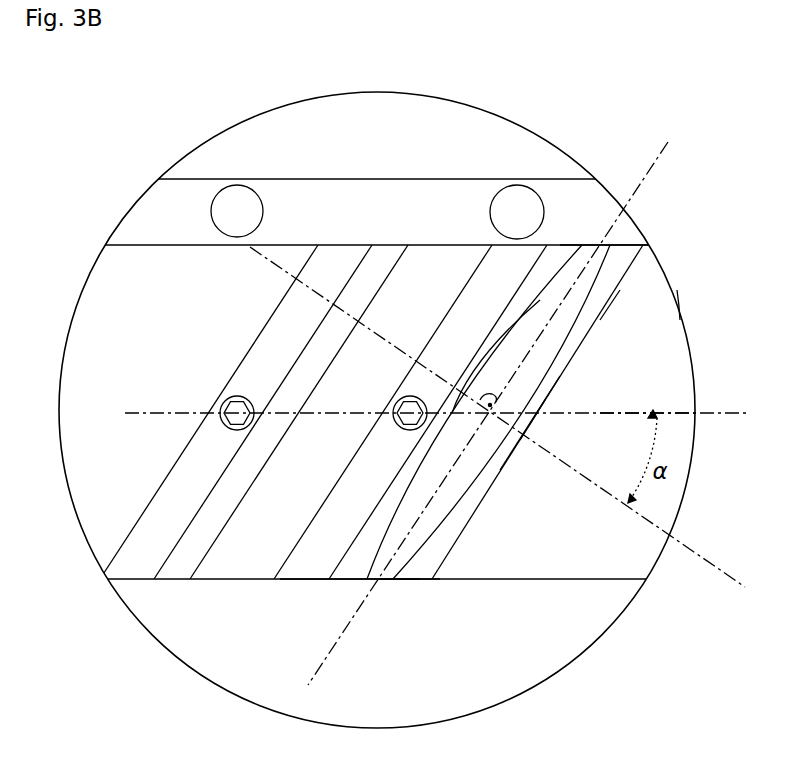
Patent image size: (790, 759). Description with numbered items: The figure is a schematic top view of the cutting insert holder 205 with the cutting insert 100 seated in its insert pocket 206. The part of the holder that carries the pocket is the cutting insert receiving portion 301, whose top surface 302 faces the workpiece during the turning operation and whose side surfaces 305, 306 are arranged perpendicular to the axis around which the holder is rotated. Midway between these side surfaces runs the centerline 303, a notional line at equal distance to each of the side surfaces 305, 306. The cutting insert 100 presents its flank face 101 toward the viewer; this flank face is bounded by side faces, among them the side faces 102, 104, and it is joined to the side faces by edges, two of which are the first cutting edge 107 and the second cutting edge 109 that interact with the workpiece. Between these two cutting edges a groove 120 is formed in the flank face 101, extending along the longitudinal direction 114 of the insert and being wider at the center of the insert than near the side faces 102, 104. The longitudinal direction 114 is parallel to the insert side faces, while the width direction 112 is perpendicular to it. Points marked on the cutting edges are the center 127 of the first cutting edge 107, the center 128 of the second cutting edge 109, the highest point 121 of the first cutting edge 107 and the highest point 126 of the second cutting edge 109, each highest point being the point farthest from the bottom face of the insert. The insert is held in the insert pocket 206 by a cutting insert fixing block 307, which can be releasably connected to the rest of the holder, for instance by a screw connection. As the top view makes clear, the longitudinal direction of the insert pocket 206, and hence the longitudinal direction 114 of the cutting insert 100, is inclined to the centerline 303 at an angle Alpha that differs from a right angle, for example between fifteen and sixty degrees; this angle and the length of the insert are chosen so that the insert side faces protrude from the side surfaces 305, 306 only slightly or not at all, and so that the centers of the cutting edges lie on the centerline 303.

The cutting insert 100 is at (600, 348).
The flank face 101 is at (463, 530).
The side face 102 is at (412, 597).
The side face 104 is at (623, 236).
The first cutting edge 107 is at (500, 470).
The second cutting edge 109 is at (376, 503).
The width direction 112 is at (696, 553).
The longitudinal direction 114 is at (659, 159).
The groove 120 is at (562, 278).
The highest point of the first cutting edge 121 is at (522, 437).
The highest point of the second cutting edge 126 is at (456, 386).
The center of the first cutting edge 127 is at (542, 421).
The center of the second cutting edge 128 is at (487, 402).
The cutting insert holder 205 is at (525, 130).
The insert pocket 206 is at (351, 587).
The cutting insert receiving portion 301 is at (680, 299).
The top surface 302 is at (671, 398).
The centerline 303 is at (718, 413).
The side surface 305 is at (549, 581).
The side surface 306 is at (431, 244).
The cutting insert fixing block 307 is at (374, 436).